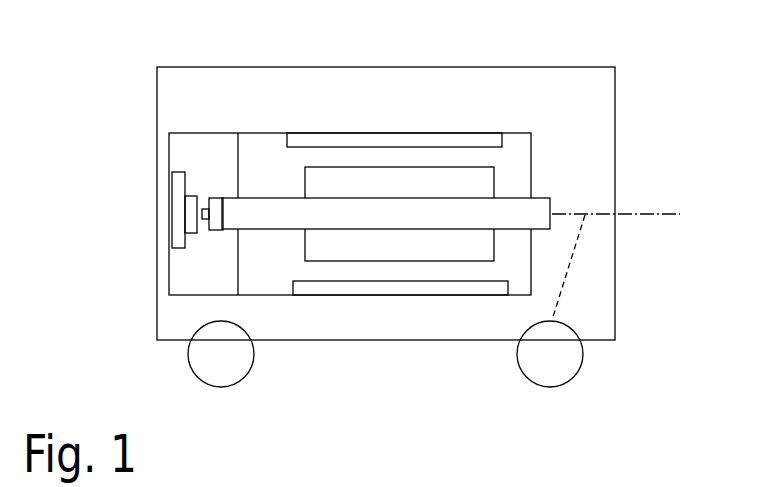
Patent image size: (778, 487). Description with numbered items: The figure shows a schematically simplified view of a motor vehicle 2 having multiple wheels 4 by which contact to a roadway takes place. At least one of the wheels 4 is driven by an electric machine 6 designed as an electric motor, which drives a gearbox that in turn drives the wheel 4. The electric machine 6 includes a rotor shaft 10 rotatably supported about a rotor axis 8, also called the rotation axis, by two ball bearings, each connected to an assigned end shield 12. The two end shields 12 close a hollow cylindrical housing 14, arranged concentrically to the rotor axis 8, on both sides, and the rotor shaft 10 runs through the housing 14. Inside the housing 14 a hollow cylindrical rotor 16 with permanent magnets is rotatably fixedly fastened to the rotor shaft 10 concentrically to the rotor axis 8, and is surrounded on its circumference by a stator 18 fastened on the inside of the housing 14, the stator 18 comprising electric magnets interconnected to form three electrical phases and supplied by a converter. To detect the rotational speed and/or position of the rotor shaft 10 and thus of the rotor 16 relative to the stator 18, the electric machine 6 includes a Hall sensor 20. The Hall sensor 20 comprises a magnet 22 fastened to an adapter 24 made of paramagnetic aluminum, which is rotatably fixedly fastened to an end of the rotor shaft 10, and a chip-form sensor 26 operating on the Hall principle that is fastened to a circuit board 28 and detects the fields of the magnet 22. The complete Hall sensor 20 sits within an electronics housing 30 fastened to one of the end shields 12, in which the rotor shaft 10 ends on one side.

The motor vehicle 2 is at (615, 157).
The wheels 4 is at (232, 365).
The electric machine 6 is at (275, 133).
The rotor axis 8 is at (640, 214).
The rotor shaft 10 is at (382, 220).
The end shield 12 is at (531, 173).
The housing 14 is at (460, 133).
The rotor 16 is at (460, 245).
The stator 18 is at (385, 288).
The Hall sensor 20 is at (200, 143).
The magnet 22 is at (207, 221).
The adapter 24 is at (213, 199).
The sensor 26 is at (188, 205).
The circuit board 28 is at (178, 220).
The electronics housing 30 is at (190, 296).